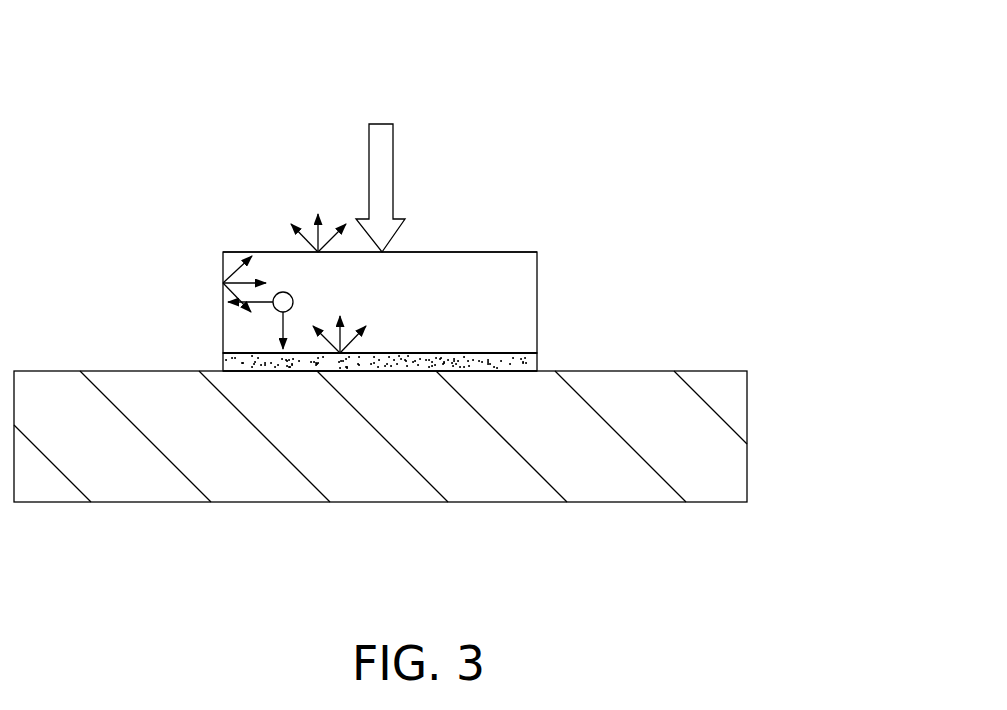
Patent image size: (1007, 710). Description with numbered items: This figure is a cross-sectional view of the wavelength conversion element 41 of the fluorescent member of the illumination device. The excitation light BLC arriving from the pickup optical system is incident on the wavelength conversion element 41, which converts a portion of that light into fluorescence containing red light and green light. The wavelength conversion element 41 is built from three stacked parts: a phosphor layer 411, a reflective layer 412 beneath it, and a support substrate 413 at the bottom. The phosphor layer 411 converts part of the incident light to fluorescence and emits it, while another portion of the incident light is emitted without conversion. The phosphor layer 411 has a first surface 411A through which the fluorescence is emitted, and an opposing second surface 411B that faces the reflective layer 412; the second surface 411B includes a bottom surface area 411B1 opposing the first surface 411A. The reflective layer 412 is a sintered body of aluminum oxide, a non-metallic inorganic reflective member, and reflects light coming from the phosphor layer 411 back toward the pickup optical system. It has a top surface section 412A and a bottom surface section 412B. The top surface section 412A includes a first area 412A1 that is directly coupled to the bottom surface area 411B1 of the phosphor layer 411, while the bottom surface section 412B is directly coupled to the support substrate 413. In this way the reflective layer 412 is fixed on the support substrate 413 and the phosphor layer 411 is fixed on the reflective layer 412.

The wavelength conversion element 41 is at (641, 86).
The phosphor layer 411 is at (525, 272).
The first surface 411A is at (495, 252).
The second surface 411B is at (502, 367).
The bottom surface area 411B1 is at (470, 321).
The reflective layer 412 is at (522, 365).
The top surface section 412A is at (242, 353).
The first area 412A1 is at (313, 322).
The bottom surface section 412B is at (246, 373).
The support substrate 413 is at (735, 410).
The excitation light BLC is at (382, 165).